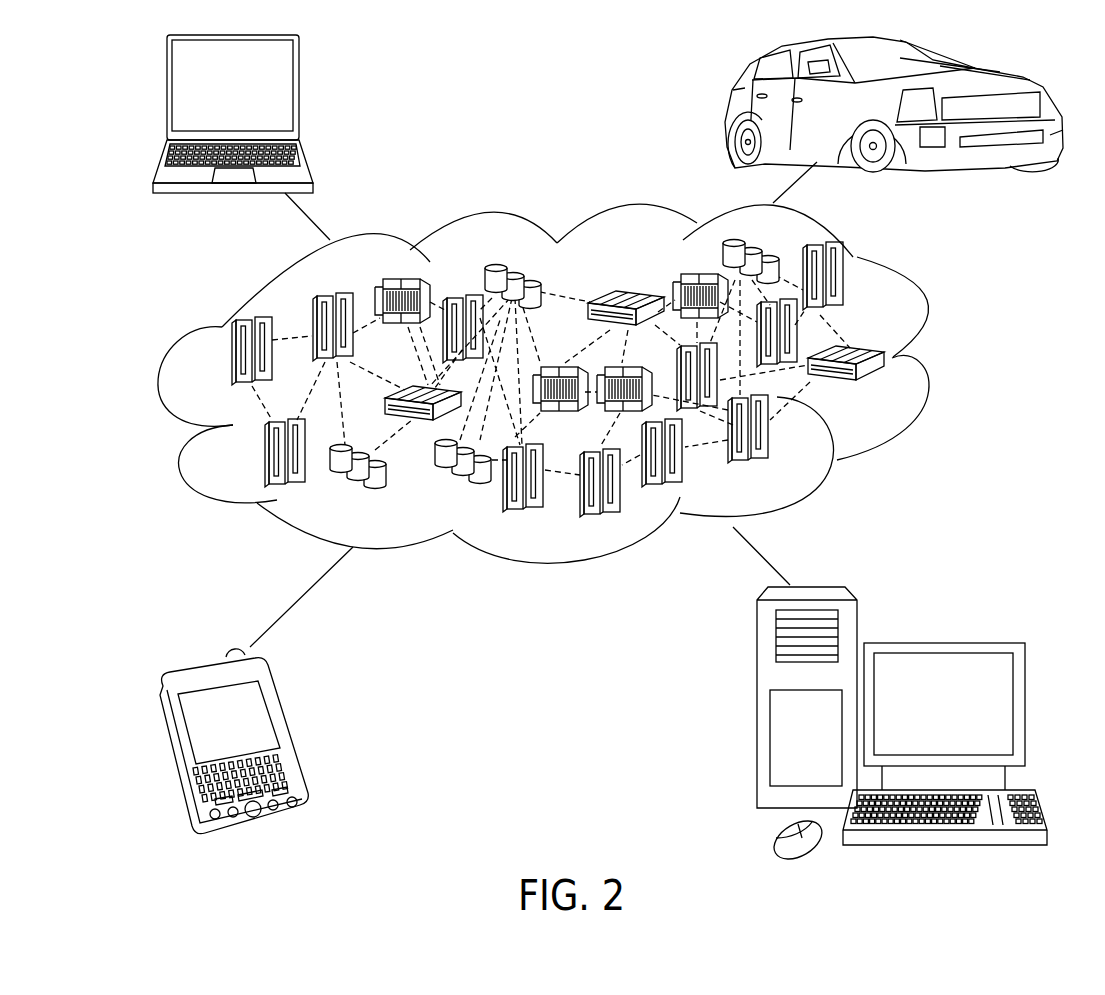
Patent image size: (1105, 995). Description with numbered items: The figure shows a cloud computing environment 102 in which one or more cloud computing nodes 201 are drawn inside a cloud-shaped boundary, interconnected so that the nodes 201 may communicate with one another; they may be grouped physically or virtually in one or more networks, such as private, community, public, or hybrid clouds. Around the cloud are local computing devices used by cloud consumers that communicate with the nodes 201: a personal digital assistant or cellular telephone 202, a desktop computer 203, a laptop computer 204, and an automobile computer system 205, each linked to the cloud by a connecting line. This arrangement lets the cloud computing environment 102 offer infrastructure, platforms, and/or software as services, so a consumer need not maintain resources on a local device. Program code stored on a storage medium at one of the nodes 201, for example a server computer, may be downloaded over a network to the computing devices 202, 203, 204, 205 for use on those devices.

The cloud computing environment 102 is at (942, 362).
The cloud computing nodes 201 is at (887, 390).
The personal digital assistant or cellular telephone 202 is at (286, 737).
The desktop computer 203 is at (940, 643).
The laptop computer 204 is at (300, 94).
The automobile computer system 205 is at (727, 111).